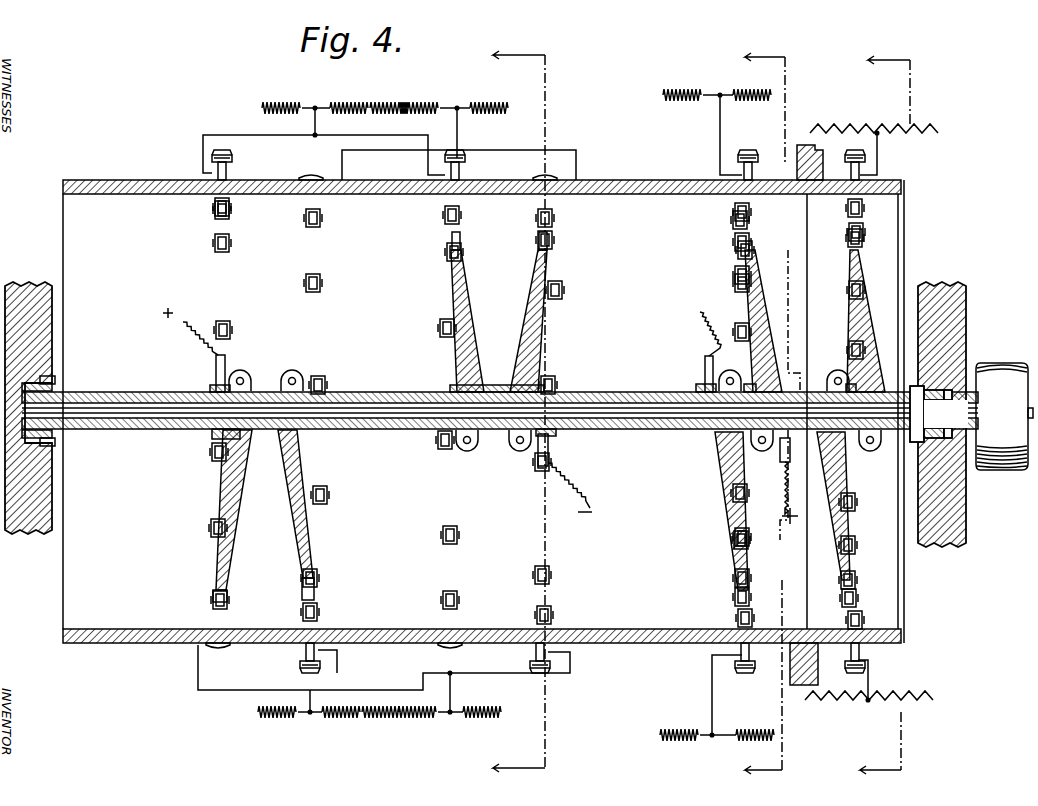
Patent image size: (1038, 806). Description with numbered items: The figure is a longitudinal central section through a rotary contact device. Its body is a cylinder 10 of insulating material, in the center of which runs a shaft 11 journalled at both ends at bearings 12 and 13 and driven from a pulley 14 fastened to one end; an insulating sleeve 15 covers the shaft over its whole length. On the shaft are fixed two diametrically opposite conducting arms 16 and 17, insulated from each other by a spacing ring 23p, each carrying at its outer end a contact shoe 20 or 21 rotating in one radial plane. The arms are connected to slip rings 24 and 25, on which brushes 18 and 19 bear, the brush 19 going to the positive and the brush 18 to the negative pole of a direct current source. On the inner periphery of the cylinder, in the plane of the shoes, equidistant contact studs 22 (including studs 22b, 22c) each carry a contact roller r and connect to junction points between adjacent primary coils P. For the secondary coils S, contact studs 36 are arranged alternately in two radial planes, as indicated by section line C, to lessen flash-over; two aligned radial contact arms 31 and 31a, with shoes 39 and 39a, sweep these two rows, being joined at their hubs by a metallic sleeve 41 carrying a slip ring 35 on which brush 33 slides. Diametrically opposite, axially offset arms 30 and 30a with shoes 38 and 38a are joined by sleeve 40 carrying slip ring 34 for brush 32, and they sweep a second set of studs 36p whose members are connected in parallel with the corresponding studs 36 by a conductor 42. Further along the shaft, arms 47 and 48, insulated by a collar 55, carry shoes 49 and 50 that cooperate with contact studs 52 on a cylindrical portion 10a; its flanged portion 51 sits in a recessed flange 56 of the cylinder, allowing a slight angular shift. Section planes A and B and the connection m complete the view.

The cylinder 10 is at (122, 181).
The cylindrical portion 10a is at (901, 188).
The shaft 11 is at (120, 402).
The journal 12 is at (52, 448).
The journal 13 is at (955, 462).
The pulley 14 is at (1012, 363).
The insulating sleeve 15 is at (86, 392).
The conducting arm 16 is at (726, 492).
The conducting arm 17 is at (762, 300).
The brush 18 is at (705, 370).
The brush 19 is at (780, 452).
The contact shoe 20 is at (732, 598).
The contact shoe 21 is at (752, 226).
The contact stud 22 is at (738, 246).
The contact 22b is at (736, 624).
The contact 22c is at (734, 213).
The hub 23' 23p is at (748, 384).
The slip ring 24 is at (697, 388).
The slip ring 25 is at (786, 372).
The contact arm 30 is at (300, 522).
The contact arm 30a is at (226, 490).
The contact arm 31 is at (528, 303).
The contact arm 31a is at (458, 295).
The brush 32 is at (216, 366).
The brush 33 is at (538, 458).
The slip ring 34 is at (210, 434).
The slip ring 35 is at (556, 438).
The contact stud 36 is at (536, 217).
The contact stud 36p is at (306, 226).
The contact shoe 38 is at (320, 602).
The contact shoe 38a is at (230, 604).
The contact shoe 39 is at (540, 230).
The contact shoe 39a is at (450, 226).
The sleeve 40 is at (262, 388).
The metallic sleeve 41 is at (493, 385).
The conductor 42 is at (296, 136).
The arm 47 is at (862, 303).
The arm 48 is at (852, 531).
The contact shoe 49 is at (864, 236).
The contact shoe 50 is at (858, 596).
The flanged portion 51 is at (838, 143).
The contact stud 52 is at (864, 205).
The collar 55 is at (848, 384).
The recessed flange portion 56 is at (797, 152).
The secondary coil S is at (378, 104).
The primary transformer coil P is at (693, 88).
The conductor m is at (866, 128).
The contact roller r is at (448, 210).
The section line A is at (879, 414).
The section line B is at (760, 413).
The section line C is at (517, 413).